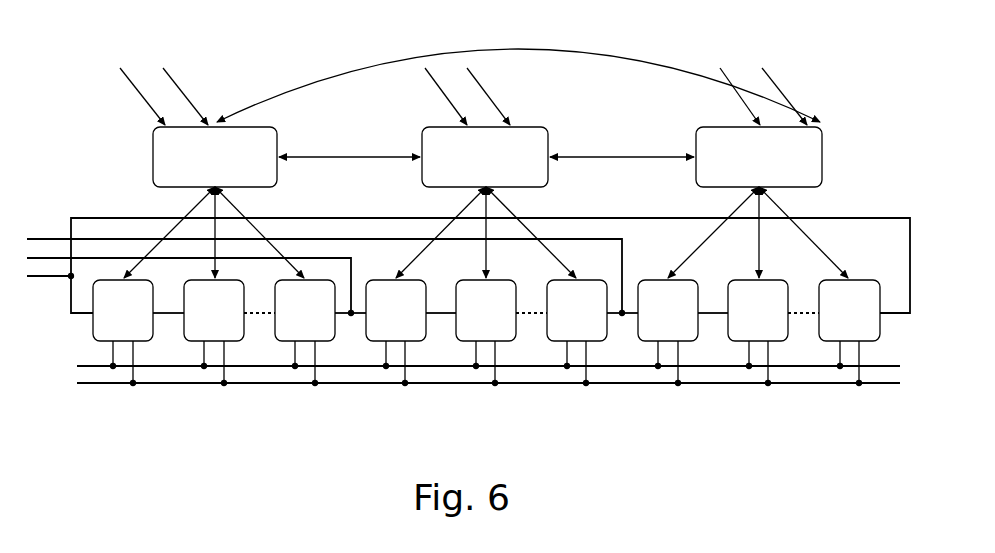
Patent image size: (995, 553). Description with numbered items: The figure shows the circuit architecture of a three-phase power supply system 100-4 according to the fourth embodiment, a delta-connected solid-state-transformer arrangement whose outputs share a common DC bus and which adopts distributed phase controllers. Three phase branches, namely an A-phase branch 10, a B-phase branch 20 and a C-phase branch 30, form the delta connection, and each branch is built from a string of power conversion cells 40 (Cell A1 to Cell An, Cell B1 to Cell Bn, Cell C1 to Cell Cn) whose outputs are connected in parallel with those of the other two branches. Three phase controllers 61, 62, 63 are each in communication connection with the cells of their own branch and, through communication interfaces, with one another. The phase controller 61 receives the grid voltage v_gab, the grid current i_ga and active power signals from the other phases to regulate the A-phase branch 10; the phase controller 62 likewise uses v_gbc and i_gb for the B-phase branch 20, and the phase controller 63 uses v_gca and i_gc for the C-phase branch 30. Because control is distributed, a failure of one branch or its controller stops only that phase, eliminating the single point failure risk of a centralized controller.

The three-phase power supply system 100-4 is at (79, 48).
The A-phase branch 10 is at (234, 353).
The B-phase branch 20 is at (612, 341).
The C-phase branch 30 is at (884, 341).
The power conversion cell 40 is at (156, 341).
The phase controller 61 is at (278, 126).
The phase controller 62 is at (549, 126).
The phase controller 63 is at (823, 126).